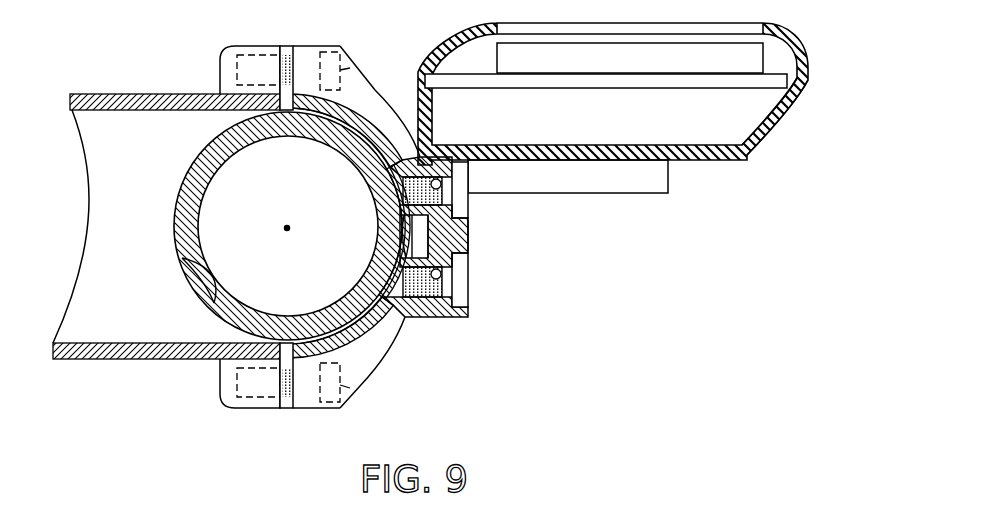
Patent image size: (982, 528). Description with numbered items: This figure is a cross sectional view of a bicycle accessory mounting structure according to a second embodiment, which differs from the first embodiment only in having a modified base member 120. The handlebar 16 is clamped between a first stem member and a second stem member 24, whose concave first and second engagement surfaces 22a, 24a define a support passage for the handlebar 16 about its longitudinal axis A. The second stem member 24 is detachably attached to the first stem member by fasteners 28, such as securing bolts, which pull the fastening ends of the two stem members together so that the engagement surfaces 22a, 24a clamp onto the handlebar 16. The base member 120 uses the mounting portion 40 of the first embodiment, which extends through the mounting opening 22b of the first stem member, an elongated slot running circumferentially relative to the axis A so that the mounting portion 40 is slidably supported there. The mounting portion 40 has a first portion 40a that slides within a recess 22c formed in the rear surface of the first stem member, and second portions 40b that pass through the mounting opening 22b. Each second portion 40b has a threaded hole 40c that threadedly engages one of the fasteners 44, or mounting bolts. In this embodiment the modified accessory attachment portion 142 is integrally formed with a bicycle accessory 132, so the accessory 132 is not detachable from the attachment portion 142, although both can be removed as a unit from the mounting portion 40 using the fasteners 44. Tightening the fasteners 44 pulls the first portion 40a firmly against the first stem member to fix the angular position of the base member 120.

The second stem member 24 is at (143, 92).
The second engagement surface 24a is at (210, 286).
The handlebar 16 is at (184, 169).
The longitudinal axis A is at (288, 231).
The first engagement surface 22a is at (332, 350).
The mounting opening 22b is at (383, 140).
The recess 22c is at (398, 324).
The fastener 28 is at (345, 70).
The base member 120 is at (697, 219).
The bicycle accessory 132 is at (769, 143).
The mounting portion 40 is at (470, 240).
The first portion 40a is at (427, 238).
The second portion 40b is at (420, 156).
The threaded hole 40c is at (438, 186).
The fastener 44 is at (460, 202).
The modified accessory attachment portion 142 is at (473, 230).